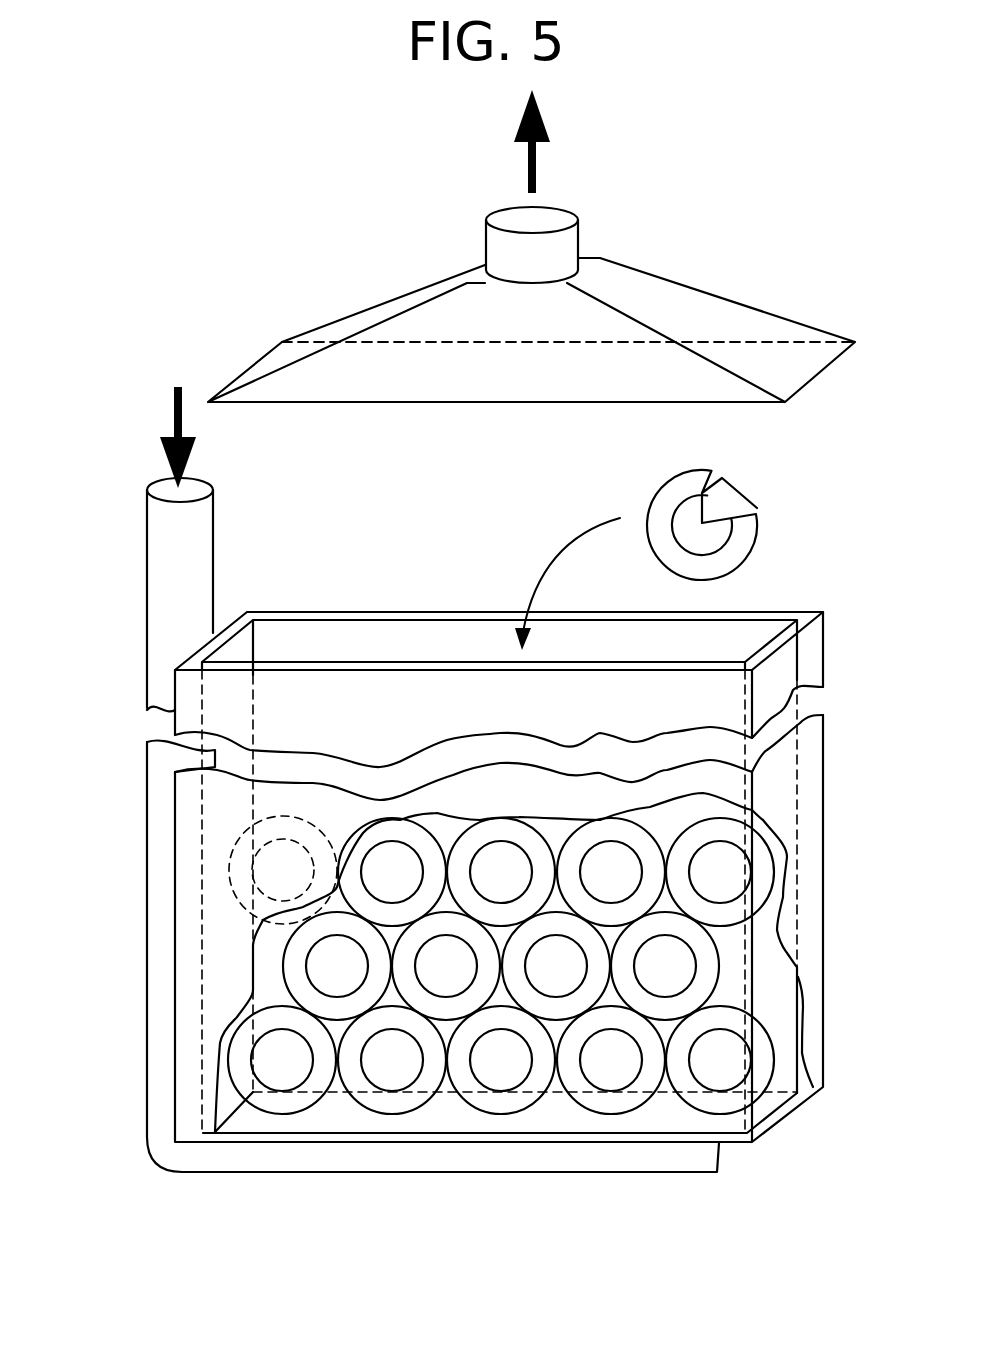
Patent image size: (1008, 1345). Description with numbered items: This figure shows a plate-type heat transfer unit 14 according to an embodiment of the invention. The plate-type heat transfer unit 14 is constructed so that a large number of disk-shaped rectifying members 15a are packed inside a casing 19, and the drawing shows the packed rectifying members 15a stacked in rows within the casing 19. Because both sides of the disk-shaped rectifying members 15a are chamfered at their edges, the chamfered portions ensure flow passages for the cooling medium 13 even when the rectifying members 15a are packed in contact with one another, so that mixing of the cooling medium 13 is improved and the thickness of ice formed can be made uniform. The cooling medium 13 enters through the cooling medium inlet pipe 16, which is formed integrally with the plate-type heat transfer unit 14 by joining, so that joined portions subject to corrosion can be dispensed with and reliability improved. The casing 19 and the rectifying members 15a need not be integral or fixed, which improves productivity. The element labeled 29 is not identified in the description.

The cooling medium 13 is at (354, 289).
The exhaust outlet 29 is at (565, 241).
The cooling medium inlet pipe 16 is at (157, 630).
The casing 19 is at (807, 658).
The plate-type heat transfer unit 14 is at (808, 937).
The disk-shaped rectifying members 15a is at (735, 867).